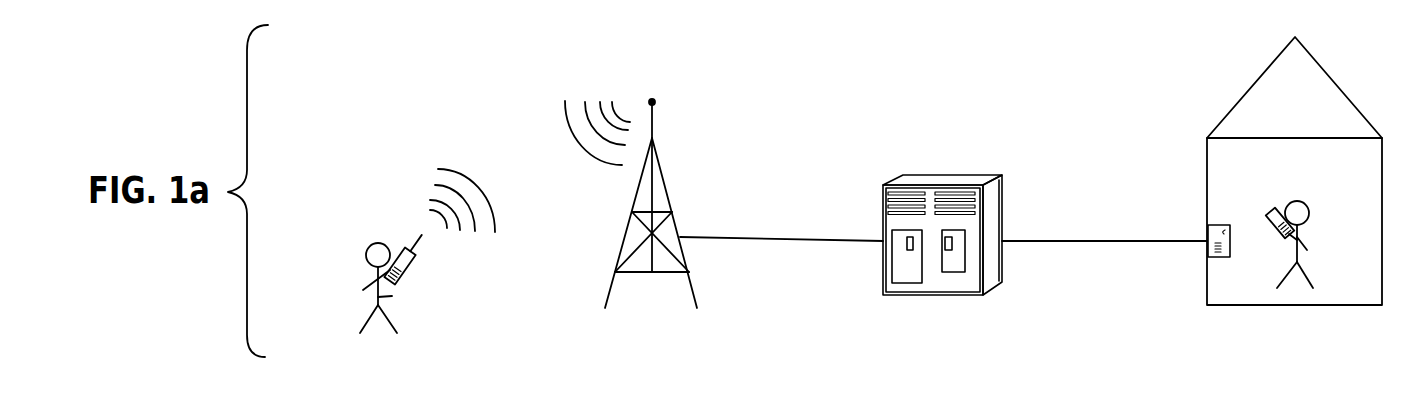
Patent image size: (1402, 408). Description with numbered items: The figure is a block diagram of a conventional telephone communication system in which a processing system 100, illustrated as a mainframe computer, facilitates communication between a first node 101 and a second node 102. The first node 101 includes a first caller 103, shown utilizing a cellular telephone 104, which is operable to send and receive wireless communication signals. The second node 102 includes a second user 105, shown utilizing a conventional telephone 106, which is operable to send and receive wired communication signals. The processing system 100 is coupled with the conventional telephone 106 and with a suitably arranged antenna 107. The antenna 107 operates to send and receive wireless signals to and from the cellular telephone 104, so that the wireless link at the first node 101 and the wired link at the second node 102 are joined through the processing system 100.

The processing system 100 is at (948, 173).
The first node 101 is at (361, 175).
The second node 102 is at (1247, 92).
The first caller 103 is at (367, 249).
The cellular telephone 104 is at (392, 296).
The second user 105 is at (1295, 200).
The conventional telephone 106 is at (1223, 259).
The antenna 107 is at (665, 187).